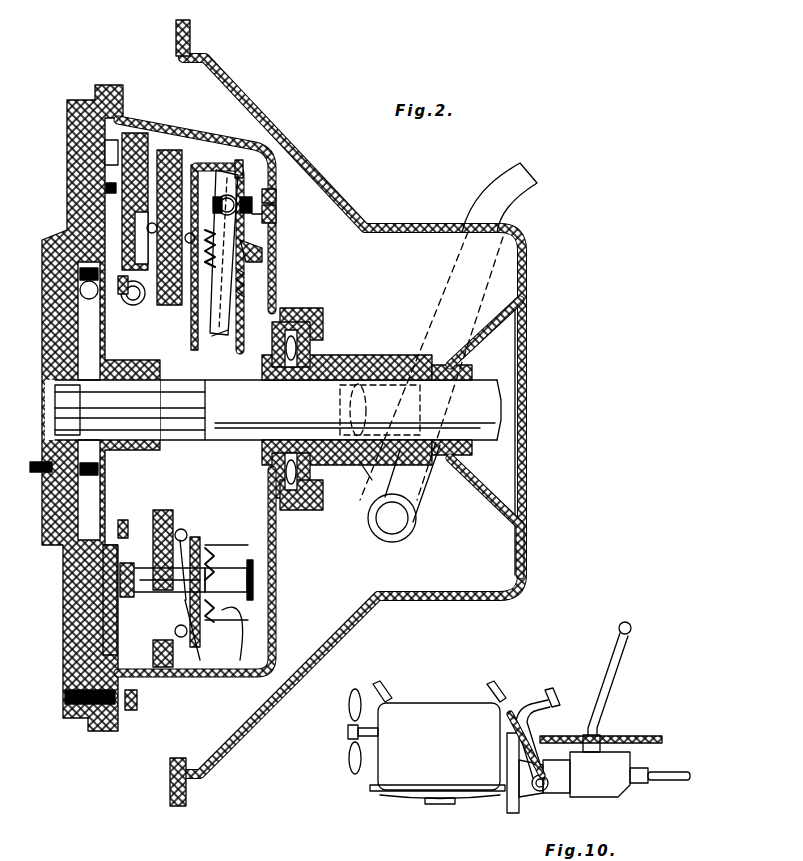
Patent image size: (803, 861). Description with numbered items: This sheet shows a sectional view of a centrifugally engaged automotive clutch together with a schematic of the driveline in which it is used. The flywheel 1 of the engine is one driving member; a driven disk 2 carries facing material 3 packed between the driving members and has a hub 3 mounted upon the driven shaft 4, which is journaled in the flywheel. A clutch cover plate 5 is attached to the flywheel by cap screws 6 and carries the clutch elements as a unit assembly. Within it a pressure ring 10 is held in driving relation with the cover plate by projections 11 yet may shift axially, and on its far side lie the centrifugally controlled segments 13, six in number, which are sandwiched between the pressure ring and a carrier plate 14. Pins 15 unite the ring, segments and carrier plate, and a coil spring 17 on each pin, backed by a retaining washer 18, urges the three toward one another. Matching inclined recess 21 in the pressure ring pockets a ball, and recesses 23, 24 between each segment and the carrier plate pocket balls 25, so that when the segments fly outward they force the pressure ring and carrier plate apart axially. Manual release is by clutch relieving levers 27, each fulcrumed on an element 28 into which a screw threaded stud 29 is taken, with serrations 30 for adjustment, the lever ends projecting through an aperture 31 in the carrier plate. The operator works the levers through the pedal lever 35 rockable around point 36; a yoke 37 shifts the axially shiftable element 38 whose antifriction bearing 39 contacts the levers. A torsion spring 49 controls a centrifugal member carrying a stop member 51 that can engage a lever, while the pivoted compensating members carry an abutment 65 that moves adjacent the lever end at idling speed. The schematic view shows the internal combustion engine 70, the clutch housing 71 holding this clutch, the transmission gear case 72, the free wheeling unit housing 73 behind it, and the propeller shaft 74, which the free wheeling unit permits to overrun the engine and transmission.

In FIG. 2, the flywheel 1 is at (70, 100).
In FIG. 2, the driven disk 2 is at (110, 290).
In FIG. 2, the facing material 3 is at (110, 190).
In FIG. 2, the driven shaft 4 is at (490, 385).
In FIG. 2, the clutch cover plate 5 is at (202, 165).
In FIG. 2, the cap screws 6 is at (133, 702).
In FIG. 2, the pressure ring 10 is at (148, 150).
In FIG. 2, the projections 11 is at (128, 133).
In FIG. 2, the segments 13 is at (175, 300).
In FIG. 2, the carrier plate 14 is at (215, 510).
In FIG. 2, the pins 15 is at (232, 669).
In FIG. 2, the coil spring 17 is at (228, 560).
In FIG. 2, the retaining washer 18 is at (258, 620).
In FIG. 2, the recess 21 is at (182, 155).
In FIG. 2, the recess 23 is at (200, 530).
In FIG. 2, the recess 24 is at (165, 520).
In FIG. 2, the balls 25 is at (205, 560).
In FIG. 2, the clutch relieving levers 27 is at (240, 252).
In FIG. 10, the clutch relieving levers 27 is at (450, 841).
In FIG. 2, the fulcrum element 28 is at (232, 205).
In FIG. 2, the screw threaded stud 29 is at (278, 219).
In FIG. 2, the serrations 30 is at (278, 206).
In FIG. 2, the aperture 31 is at (238, 162).
In FIG. 2, the pedal lever 35 is at (520, 207).
In FIG. 2, the rocking point 36 is at (398, 528).
In FIG. 2, the yoke 37 is at (360, 482).
In FIG. 2, the axially shiftable element 38 is at (335, 352).
In FIG. 2, the antifriction bearing 39 is at (305, 310).
In FIG. 2, the torsion spring 49 is at (242, 296).
In FIG. 2, the stop member 51 is at (265, 255).
In FIG. 2, the abutment 65 is at (248, 335).
In FIG. 10, the internal combustion engine 70 is at (430, 712).
In FIG. 2, the clutch housing 71 is at (266, 114).
In FIG. 10, the clutch housing 71 is at (524, 740).
In FIG. 10, the transmission gear case 72 is at (612, 757).
In FIG. 10, the free wheeling unit housing 73 is at (648, 770).
In FIG. 10, the propeller shaft 74 is at (690, 774).